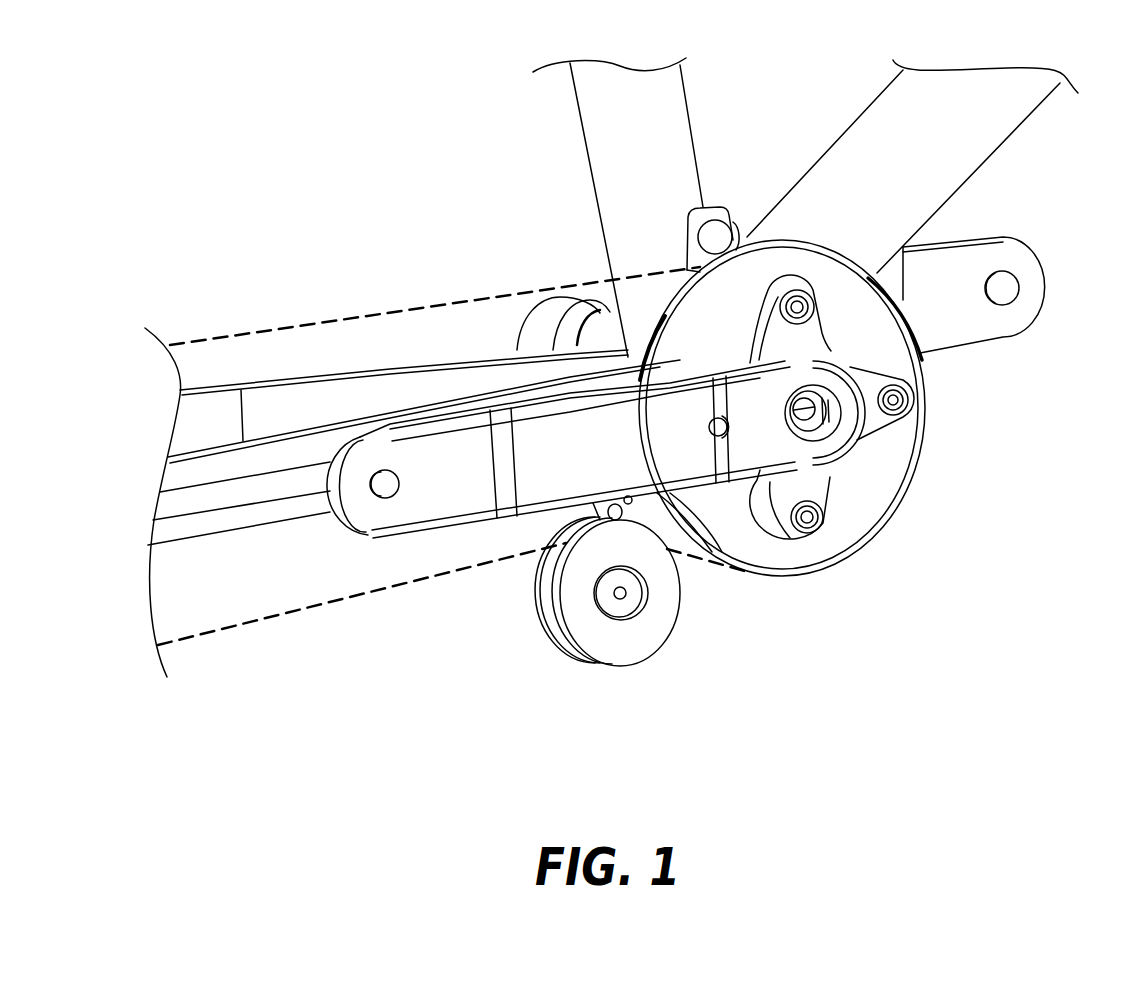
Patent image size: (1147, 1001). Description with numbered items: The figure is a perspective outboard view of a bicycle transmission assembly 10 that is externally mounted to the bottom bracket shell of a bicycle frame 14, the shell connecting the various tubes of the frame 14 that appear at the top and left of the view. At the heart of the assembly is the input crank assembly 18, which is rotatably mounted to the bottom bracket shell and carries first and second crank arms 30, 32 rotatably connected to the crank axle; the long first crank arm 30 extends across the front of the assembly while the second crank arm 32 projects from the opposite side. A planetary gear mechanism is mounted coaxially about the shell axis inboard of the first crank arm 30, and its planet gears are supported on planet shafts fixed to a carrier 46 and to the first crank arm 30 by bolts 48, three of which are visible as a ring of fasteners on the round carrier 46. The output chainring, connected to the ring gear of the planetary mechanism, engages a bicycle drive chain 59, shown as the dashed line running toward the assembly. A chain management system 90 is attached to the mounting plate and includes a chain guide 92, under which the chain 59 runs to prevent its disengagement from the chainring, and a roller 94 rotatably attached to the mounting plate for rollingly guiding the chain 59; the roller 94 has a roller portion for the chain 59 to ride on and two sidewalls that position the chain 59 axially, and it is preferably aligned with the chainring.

The bicycle transmission assembly 10 is at (955, 403).
The bicycle frame 14 is at (867, 153).
The input crank assembly 18 is at (872, 450).
The first crank arm 30 is at (383, 515).
The second crank arm 32 is at (937, 267).
The carrier 46 is at (880, 478).
The bolts 48 is at (797, 300).
The bicycle drive chain 59 is at (228, 630).
The chain management system 90 is at (537, 638).
The chain guide 92 is at (712, 237).
The roller 94 is at (638, 627).